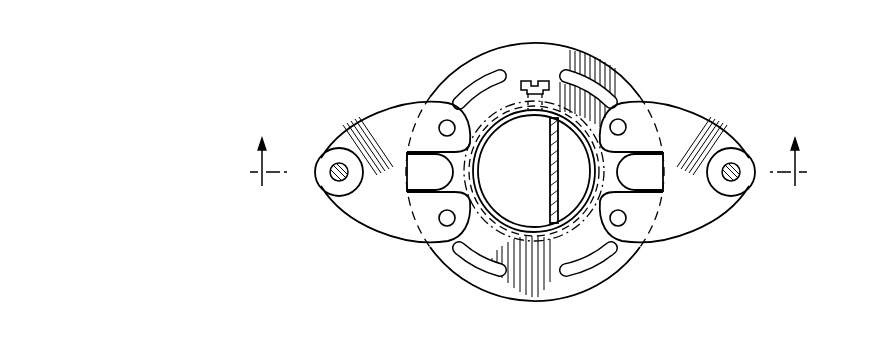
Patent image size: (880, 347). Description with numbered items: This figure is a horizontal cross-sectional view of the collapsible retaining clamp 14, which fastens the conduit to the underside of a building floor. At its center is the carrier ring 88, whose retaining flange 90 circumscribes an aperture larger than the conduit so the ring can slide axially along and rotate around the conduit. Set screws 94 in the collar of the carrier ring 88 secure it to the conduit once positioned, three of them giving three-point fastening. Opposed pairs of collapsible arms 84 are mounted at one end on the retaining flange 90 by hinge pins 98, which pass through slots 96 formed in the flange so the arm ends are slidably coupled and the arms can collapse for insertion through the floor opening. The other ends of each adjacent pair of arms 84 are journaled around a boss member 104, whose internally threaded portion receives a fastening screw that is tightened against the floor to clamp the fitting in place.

The collapsible retaining clamp 14 is at (722, 76).
The collapsible arms 84 is at (370, 122).
The carrier ring 88 is at (558, 296).
The retaining flange 90 is at (518, 287).
The set screws 94 is at (542, 80).
The slots 96 is at (490, 80).
The hinge pins 98 is at (447, 128).
The boss members 104 is at (330, 190).